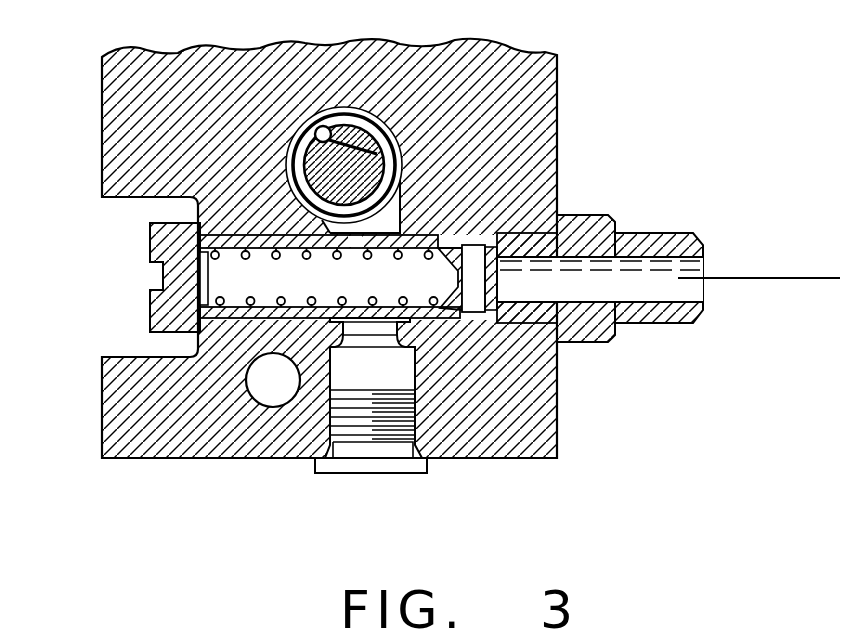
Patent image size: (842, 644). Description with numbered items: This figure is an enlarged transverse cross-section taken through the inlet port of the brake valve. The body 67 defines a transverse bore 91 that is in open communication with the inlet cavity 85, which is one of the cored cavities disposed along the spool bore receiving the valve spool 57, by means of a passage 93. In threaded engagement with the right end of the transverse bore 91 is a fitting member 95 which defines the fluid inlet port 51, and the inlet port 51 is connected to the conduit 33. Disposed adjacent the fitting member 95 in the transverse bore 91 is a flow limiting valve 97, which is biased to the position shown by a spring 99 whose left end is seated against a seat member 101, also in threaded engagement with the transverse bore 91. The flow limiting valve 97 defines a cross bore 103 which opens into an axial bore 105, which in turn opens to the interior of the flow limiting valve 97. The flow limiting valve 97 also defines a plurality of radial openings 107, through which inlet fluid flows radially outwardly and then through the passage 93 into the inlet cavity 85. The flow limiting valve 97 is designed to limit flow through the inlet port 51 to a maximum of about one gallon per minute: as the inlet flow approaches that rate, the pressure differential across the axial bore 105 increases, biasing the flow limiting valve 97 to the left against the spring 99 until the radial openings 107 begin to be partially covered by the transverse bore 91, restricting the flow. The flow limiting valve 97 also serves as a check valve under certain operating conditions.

The conduit 33 is at (768, 278).
The inlet port 51 is at (637, 279).
The valve spool 57 is at (390, 126).
The body 67 is at (537, 118).
The inlet cavity 85 is at (320, 127).
The transverse bore 91 is at (283, 305).
The passage 93 is at (400, 200).
The fitting member 95 is at (647, 324).
The flow limiting valve 97 is at (415, 314).
The spring 99 is at (277, 250).
The seat member 101 is at (163, 240).
The cross bore 103 is at (483, 319).
The axial bore 105 is at (448, 236).
The radial openings 107 is at (363, 323).